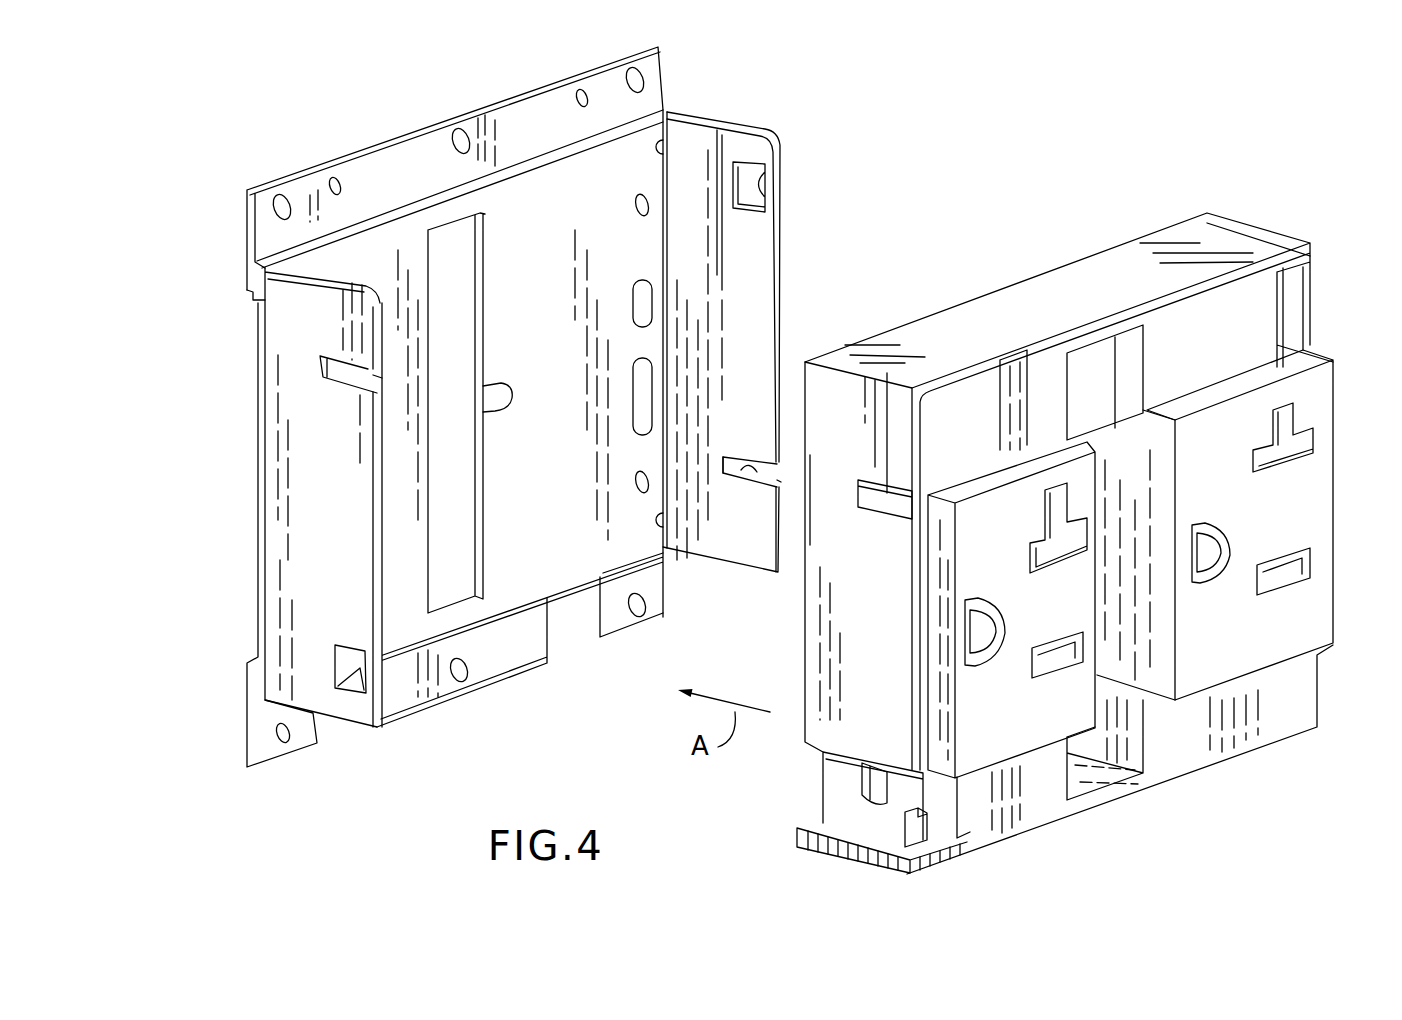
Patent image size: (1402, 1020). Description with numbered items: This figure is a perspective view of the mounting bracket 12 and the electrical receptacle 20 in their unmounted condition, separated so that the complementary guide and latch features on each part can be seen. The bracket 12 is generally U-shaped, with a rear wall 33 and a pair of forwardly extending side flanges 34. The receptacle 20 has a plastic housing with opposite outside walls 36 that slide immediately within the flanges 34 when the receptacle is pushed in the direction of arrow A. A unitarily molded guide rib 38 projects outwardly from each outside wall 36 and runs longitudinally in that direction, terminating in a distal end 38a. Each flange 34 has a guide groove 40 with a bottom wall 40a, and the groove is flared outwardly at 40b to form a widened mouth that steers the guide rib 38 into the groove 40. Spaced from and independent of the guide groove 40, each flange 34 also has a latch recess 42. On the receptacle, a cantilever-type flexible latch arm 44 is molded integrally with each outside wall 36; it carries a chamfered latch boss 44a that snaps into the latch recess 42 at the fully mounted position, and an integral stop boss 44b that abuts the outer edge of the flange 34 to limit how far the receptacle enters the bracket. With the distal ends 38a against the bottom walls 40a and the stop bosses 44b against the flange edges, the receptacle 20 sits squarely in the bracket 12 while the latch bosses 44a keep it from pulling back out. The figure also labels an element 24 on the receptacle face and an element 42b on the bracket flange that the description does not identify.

The mounting bracket 12 is at (688, 97).
The electrical receptacle 20 is at (1214, 208).
The receptacle outlets 24 is at (1290, 560).
The rear wall 33 is at (512, 97).
The side flange 34 is at (742, 258).
The outside wall 36 is at (833, 680).
The guide rib 38 is at (877, 493).
The distal end 38a is at (858, 483).
The guide groove 40 is at (374, 391).
The bottom wall 40a is at (738, 472).
The flared mouth 40b is at (773, 486).
The latch recess 42 is at (763, 168).
The slot edge 42b is at (378, 394).
The flexible latch arm 44 is at (1283, 330).
The latch boss 44a is at (320, 360).
The stop boss 44b is at (1305, 292).